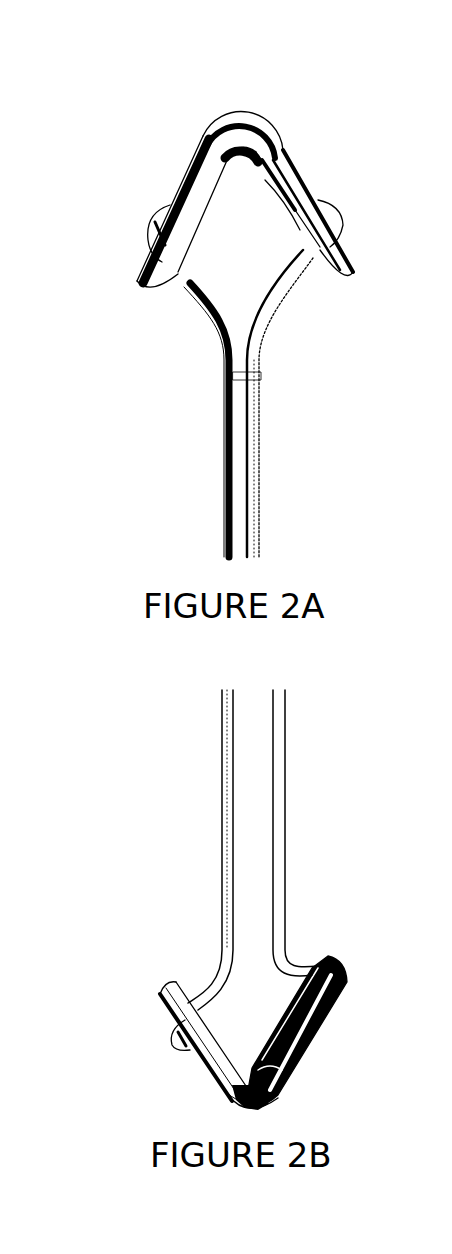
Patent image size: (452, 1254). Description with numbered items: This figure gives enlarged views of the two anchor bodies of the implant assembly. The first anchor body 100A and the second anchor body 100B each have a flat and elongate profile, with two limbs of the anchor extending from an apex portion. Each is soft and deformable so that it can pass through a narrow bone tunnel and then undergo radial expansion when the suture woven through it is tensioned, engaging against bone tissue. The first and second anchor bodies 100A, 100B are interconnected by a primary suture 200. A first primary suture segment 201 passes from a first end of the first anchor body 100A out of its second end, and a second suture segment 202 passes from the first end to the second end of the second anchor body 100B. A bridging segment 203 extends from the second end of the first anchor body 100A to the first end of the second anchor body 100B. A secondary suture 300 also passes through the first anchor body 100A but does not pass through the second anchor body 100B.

In FIG. 2A, the first anchor body 100A is at (190, 145).
In FIG. 2B, the second anchor body 100B is at (255, 993).
In FIG. 2A, the primary suture 200 is at (227, 403).
In FIG. 2B, the primary suture 200 is at (265, 850).
In FIG. 2A, the first primary suture segment 201 is at (247, 125).
In FIG. 2B, the second suture segment 202 is at (288, 1033).
In FIG. 2B, the bridging segment 203 is at (224, 762).
In FIG. 2A, the secondary suture 300 is at (232, 318).
In FIG. 2B, the secondary suture 300 is at (362, 833).